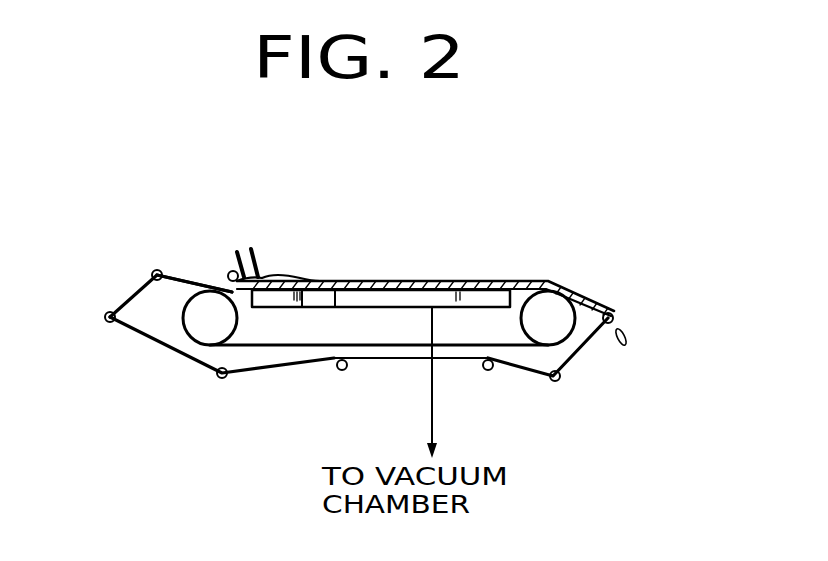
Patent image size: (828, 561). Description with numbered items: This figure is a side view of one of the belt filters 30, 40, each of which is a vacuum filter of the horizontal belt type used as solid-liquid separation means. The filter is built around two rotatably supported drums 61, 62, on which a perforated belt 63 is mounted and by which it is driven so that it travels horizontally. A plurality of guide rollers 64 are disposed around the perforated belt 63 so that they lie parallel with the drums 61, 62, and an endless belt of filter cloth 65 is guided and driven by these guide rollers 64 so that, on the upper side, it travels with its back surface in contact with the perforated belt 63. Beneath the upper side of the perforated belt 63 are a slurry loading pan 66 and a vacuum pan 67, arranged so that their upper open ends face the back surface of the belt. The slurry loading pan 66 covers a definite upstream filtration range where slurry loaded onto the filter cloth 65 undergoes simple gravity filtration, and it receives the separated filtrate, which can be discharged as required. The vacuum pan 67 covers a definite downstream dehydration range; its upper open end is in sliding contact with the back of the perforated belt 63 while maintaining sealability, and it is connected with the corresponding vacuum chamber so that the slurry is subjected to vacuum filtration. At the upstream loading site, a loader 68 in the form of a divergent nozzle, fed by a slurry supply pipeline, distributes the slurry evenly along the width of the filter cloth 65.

The belt filter 30 is at (558, 259).
The belt filter 40 is at (343, 331).
The drum 61 is at (202, 332).
The drum 62 is at (563, 328).
The perforated belt 63 is at (245, 347).
The guide rollers 64 is at (152, 274).
The filter cloth 65 is at (185, 279).
The slurry loading pan 66 is at (312, 308).
The vacuum pan 67 is at (386, 308).
The loader 68 is at (257, 262).